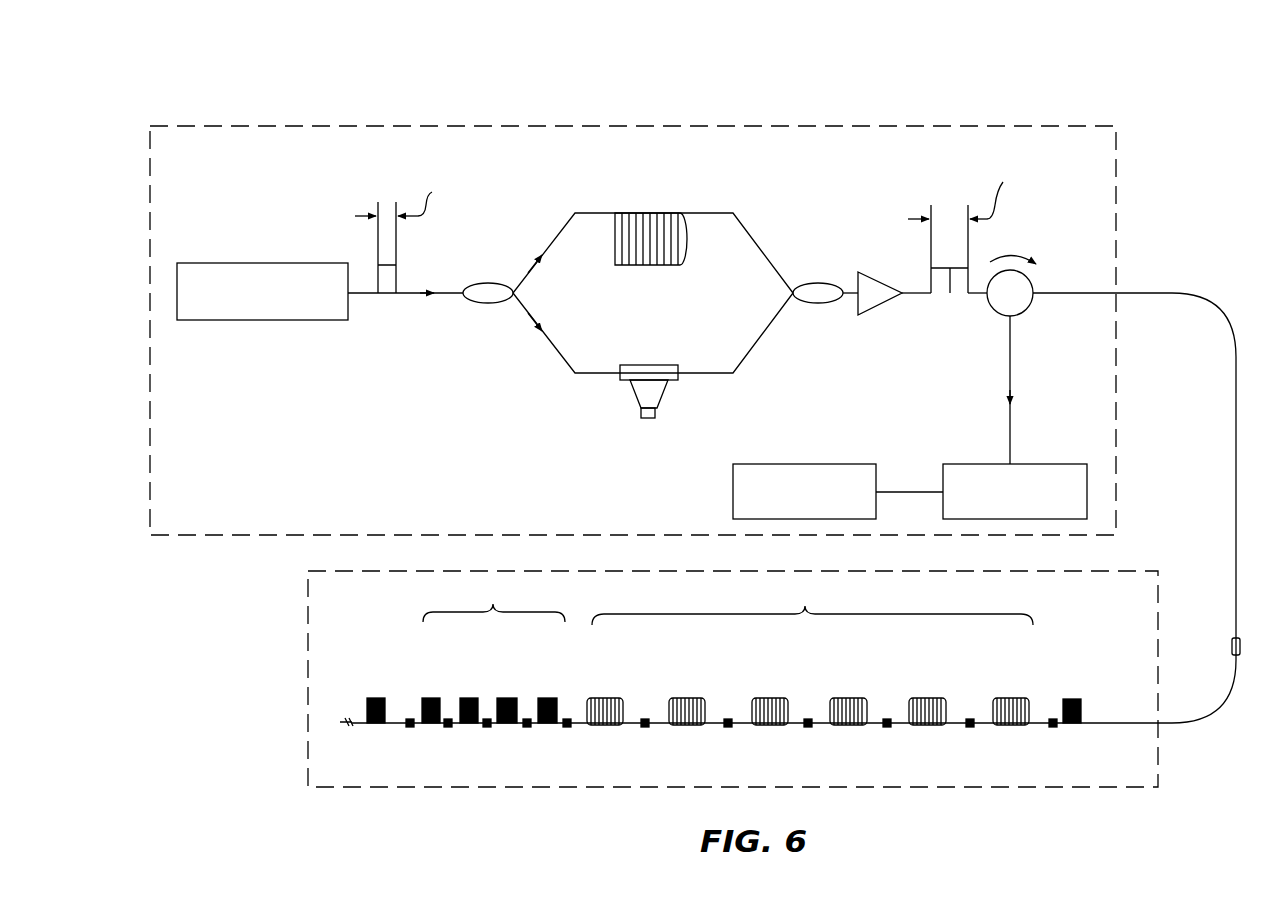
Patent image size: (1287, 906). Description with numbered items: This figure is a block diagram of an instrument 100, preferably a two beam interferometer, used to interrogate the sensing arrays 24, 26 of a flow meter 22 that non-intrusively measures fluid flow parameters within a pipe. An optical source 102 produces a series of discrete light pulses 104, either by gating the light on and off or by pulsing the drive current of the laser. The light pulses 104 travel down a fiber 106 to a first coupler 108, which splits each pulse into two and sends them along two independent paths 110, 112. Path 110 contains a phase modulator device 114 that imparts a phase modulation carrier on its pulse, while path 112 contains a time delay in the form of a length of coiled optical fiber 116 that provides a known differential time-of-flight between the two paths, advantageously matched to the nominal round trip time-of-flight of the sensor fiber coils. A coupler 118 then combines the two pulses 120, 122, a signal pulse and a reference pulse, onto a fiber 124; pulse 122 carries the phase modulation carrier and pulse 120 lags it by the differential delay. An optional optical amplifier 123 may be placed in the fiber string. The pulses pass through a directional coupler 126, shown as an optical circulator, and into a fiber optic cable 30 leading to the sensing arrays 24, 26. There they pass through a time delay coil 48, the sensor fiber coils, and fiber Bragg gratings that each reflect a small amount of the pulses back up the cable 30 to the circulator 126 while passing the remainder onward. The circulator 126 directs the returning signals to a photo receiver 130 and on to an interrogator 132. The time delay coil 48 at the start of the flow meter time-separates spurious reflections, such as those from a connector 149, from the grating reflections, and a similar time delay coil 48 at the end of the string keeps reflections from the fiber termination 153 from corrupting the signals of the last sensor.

The instrument 100 is at (1074, 88).
The optical source 102 is at (266, 322).
The light pulses 104 is at (386, 296).
The fiber 106 is at (413, 283).
The first coupler 108 is at (486, 304).
The path 110 is at (553, 372).
The path 112 is at (585, 195).
The phase modulator device 114 is at (640, 393).
The coiled optical fiber 116 is at (656, 213).
The coupler 118 is at (822, 305).
The pulse 120 is at (938, 298).
The pulse 122 is at (960, 298).
The optical amplifier 123 is at (872, 270).
The fiber 124 is at (977, 298).
The directional coupler 126 is at (1033, 289).
The photo receiver 130 is at (1058, 464).
The interrogator 132 is at (733, 493).
The fiber optic cable 30 is at (1151, 293).
The connector 149 is at (1231, 646).
The flow meter 22 is at (1172, 757).
The sensing array 24 is at (812, 604).
The sensing array 26 is at (494, 602).
The time delay coil 48 is at (370, 697).
The fiber termination 153 is at (340, 722).